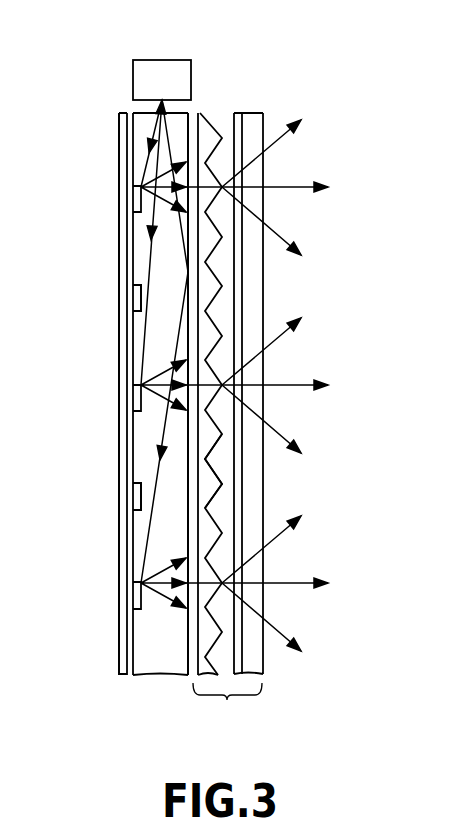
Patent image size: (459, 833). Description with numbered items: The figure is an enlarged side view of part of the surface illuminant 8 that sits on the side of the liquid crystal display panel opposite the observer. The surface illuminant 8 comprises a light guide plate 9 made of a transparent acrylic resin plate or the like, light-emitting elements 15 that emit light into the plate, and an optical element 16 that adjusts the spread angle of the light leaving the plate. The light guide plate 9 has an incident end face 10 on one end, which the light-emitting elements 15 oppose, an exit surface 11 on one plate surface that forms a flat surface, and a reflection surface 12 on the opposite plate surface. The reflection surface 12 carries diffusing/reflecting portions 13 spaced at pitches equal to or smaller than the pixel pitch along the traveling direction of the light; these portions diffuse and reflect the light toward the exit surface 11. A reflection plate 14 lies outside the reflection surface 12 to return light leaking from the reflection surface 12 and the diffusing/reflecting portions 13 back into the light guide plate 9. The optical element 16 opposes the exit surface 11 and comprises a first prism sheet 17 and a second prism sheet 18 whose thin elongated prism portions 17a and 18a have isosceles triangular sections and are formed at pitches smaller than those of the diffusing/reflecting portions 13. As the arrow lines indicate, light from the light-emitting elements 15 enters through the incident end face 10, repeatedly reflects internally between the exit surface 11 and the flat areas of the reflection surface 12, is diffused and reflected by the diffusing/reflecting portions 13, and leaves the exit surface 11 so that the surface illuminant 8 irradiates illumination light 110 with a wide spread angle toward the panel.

The surface illuminant 8 is at (102, 673).
The light guide plate 9 is at (158, 660).
The incident end face 10 is at (134, 112).
The exit surface 11 is at (187, 637).
The reflection surface 12 is at (133, 437).
The diffusing/reflecting portions 13 is at (141, 297).
The reflection plate 14 is at (119, 193).
The light-emitting elements 15 is at (162, 68).
The optical element 16 is at (227, 708).
The first prism sheet 17 is at (212, 113).
The prism portions 17a is at (213, 487).
The second prism sheet 18 is at (253, 112).
The prism portions 18a is at (253, 292).
The illumination light 110 is at (285, 142).